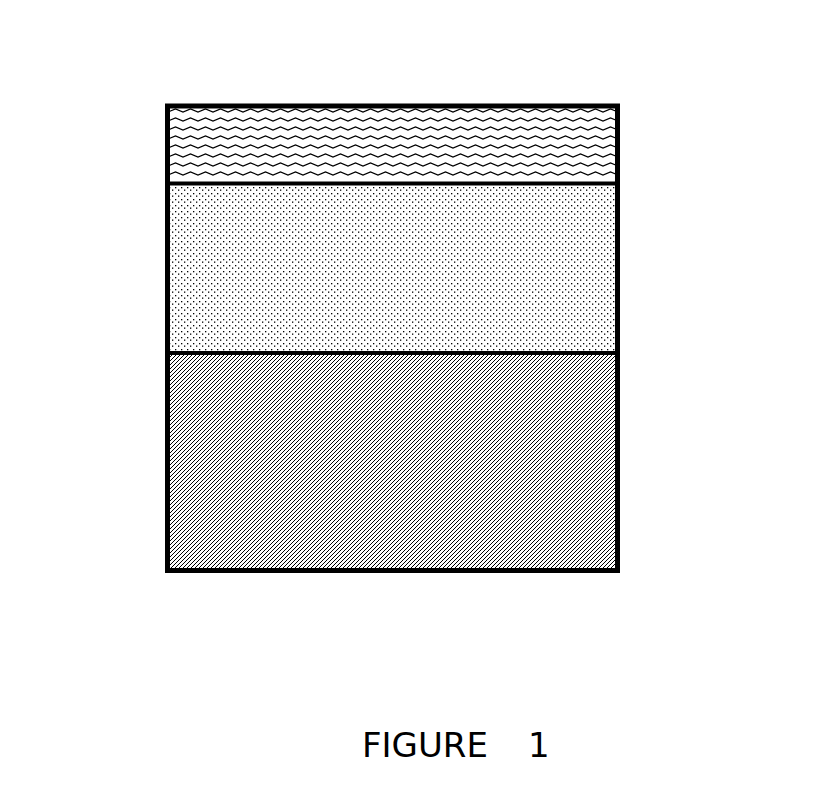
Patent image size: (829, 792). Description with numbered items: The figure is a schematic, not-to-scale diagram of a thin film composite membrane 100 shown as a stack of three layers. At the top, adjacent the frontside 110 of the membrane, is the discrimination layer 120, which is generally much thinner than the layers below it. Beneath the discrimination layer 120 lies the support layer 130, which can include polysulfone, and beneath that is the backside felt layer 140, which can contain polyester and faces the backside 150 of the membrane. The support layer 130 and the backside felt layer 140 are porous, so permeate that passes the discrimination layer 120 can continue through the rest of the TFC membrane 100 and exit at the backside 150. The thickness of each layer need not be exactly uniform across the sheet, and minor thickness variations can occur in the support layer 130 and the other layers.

The TFC membrane 100 is at (143, 112).
The frontside 110 is at (363, 107).
The discrimination layer 120 is at (605, 157).
The support layer 130 is at (605, 287).
The backside felt layer 140 is at (605, 462).
The backside 150 is at (349, 572).